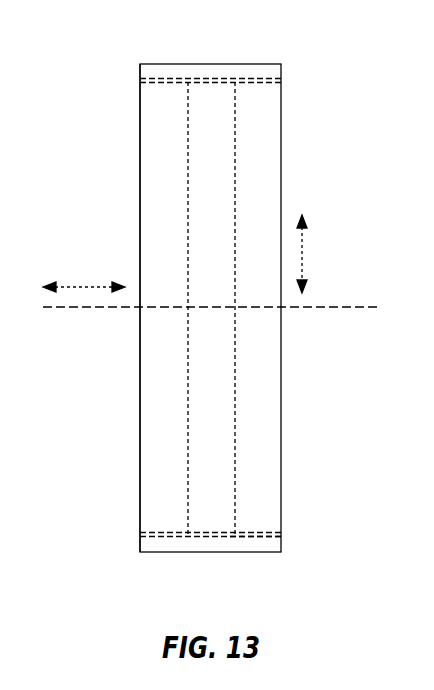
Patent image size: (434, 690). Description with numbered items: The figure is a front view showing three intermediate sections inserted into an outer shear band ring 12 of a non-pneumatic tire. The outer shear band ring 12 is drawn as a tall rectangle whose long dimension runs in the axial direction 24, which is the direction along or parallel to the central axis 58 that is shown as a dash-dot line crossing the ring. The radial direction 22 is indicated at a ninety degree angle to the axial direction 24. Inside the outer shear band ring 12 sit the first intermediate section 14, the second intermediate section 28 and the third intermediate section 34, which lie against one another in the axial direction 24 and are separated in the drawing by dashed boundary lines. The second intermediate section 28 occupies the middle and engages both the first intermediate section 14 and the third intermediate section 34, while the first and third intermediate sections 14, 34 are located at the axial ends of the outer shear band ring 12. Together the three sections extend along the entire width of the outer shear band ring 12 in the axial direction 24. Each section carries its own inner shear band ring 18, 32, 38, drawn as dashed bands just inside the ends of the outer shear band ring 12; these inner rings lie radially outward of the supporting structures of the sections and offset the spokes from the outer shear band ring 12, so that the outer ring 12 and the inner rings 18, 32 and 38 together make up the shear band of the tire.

The outer shear band ring 12 is at (162, 64).
The first intermediate section 14 is at (157, 342).
The inner shear band ring 18 is at (166, 536).
The radial direction 22 is at (302, 253).
The axial direction 24 is at (82, 287).
The second intermediate section 28 is at (210, 408).
The inner shear band ring 32 is at (207, 78).
The third intermediate section 34 is at (265, 435).
The inner shear band ring 38 is at (260, 536).
The central axis 58 is at (337, 307).